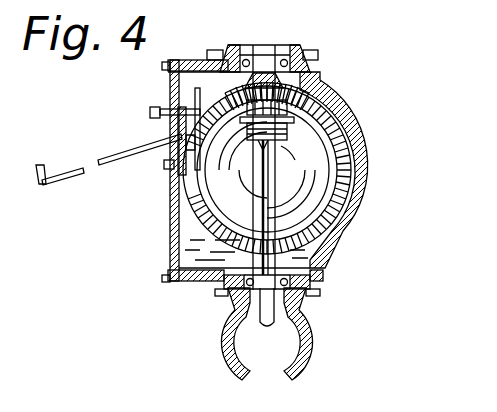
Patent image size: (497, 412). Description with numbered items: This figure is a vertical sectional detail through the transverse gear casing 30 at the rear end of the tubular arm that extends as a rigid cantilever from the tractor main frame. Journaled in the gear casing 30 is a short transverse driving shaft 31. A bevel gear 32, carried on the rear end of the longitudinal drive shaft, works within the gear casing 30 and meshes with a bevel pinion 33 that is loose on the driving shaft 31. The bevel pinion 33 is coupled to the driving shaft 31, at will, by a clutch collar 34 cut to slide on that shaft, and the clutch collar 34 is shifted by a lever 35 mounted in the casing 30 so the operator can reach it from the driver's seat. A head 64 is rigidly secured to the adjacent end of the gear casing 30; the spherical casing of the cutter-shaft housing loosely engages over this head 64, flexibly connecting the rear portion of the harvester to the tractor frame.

The gear casing 30 is at (362, 185).
The driving shaft 31 is at (278, 197).
The bevel gear 32 is at (340, 147).
The bevel pinion 33 is at (298, 87).
The clutch collar 34 is at (313, 115).
The lever 35 is at (106, 168).
The head 64 is at (228, 347).